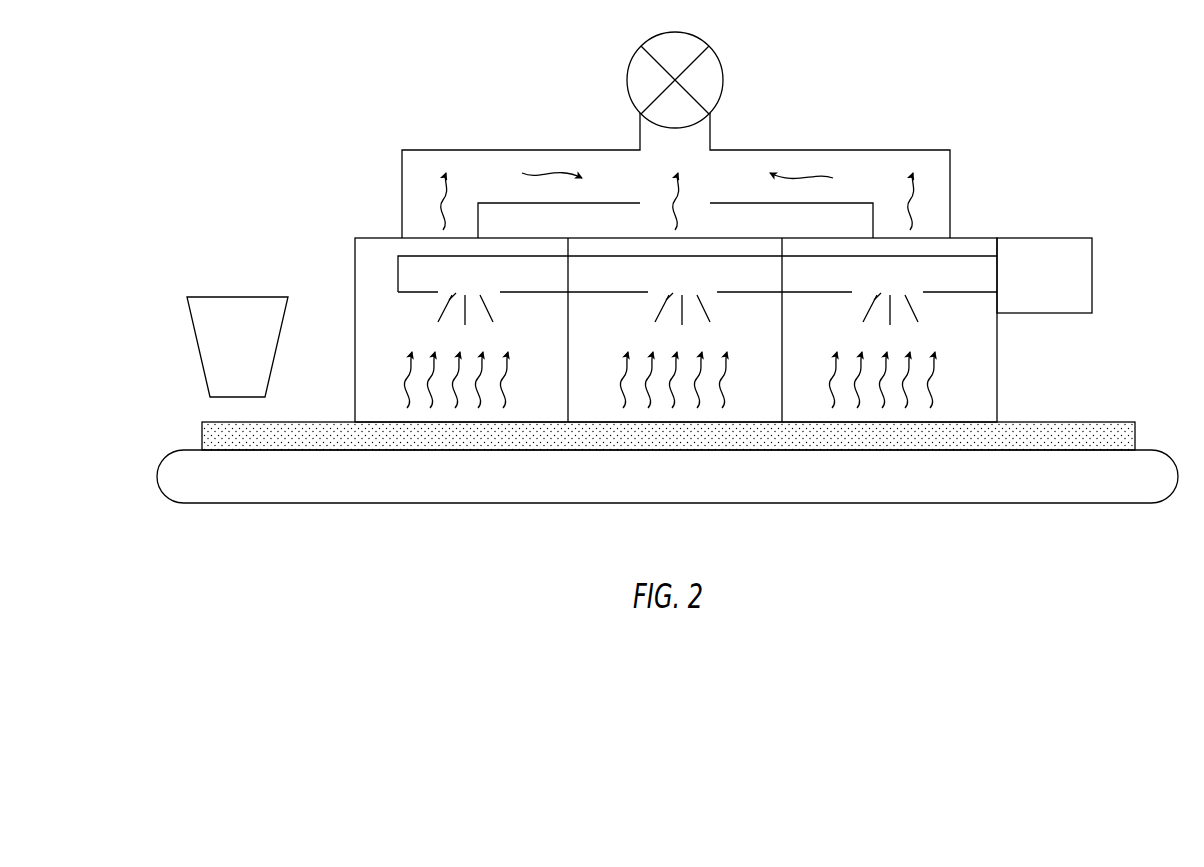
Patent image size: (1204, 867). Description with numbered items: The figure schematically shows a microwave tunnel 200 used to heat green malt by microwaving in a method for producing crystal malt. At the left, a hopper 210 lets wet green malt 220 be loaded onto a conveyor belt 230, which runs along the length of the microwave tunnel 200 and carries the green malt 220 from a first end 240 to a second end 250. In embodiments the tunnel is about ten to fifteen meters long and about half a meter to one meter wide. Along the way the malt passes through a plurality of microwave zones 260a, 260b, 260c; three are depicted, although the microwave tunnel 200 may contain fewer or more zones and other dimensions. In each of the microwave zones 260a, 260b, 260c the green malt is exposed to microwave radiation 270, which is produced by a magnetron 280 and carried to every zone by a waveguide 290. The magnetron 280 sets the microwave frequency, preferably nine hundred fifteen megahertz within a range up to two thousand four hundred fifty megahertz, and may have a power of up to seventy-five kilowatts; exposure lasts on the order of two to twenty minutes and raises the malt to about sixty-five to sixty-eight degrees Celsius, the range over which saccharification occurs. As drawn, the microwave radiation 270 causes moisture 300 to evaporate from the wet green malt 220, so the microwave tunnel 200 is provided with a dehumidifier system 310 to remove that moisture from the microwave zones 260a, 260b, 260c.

The microwave tunnel 200 is at (338, 177).
The hopper 210 is at (237, 317).
The wet green malt 220 is at (303, 440).
The conveyor belt 230 is at (440, 450).
The first end 240 is at (340, 373).
The second end 250 is at (1055, 410).
The first microwave zone 260a is at (513, 238).
The second microwave zone 260b is at (743, 238).
The third microwave zone 260c is at (975, 238).
The microwave radiation 270 is at (449, 300).
The magnetron 280 is at (1053, 267).
The waveguide 290 is at (957, 293).
The moisture 300 is at (622, 400).
The dehumidifier system 310 is at (722, 83).